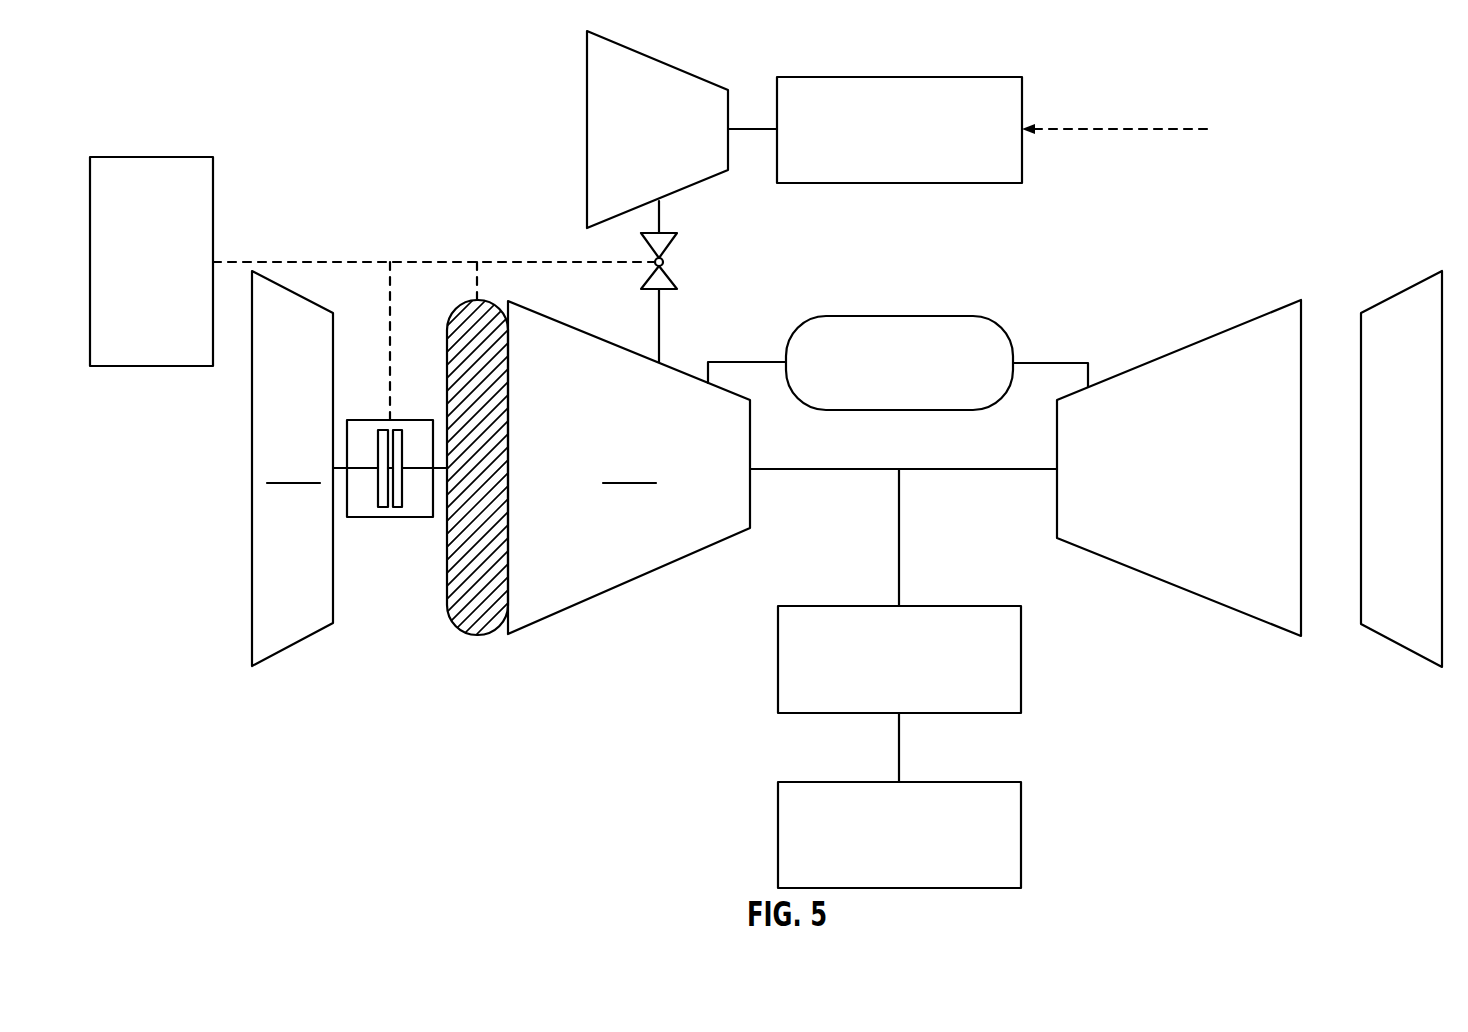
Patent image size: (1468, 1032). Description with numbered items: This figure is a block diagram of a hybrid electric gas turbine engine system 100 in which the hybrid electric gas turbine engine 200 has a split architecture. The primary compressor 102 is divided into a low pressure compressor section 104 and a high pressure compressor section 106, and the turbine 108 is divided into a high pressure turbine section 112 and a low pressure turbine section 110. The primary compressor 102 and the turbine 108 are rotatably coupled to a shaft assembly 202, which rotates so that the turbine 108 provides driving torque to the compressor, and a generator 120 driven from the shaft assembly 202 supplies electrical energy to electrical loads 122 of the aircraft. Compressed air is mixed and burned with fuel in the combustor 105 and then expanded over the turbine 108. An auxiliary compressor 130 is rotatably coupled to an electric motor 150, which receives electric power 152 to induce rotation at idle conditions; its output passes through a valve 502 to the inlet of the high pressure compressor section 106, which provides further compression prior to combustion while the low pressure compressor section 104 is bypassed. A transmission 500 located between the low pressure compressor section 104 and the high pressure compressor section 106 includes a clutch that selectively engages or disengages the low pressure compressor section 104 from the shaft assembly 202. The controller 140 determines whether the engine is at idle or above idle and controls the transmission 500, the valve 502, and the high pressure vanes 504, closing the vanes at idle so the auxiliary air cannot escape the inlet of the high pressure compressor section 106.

The hybrid electric gas turbine engine system 100 is at (1183, 58).
The primary compressor 102 is at (384, 662).
The low pressure compressor section 104 is at (290, 648).
The combustor 105 is at (899, 315).
The high pressure compressor section 106 is at (604, 598).
The turbine 108 is at (1385, 197).
The low pressure turbine section 110 is at (1403, 290).
The high pressure turbine section 112 is at (1180, 348).
The generator 120 is at (956, 606).
The electrical loads 122 is at (956, 782).
The auxiliary compressor 130 is at (662, 50).
The controller 140 is at (130, 290).
The electric motor 150 is at (955, 77).
The electric power 152 is at (1110, 128).
The hybrid electric gas turbine engine 200 is at (769, 560).
The shaft assembly 202 is at (948, 468).
The transmission 500 is at (396, 530).
The valve 502 is at (667, 250).
The high pressure vanes 504 is at (480, 622).